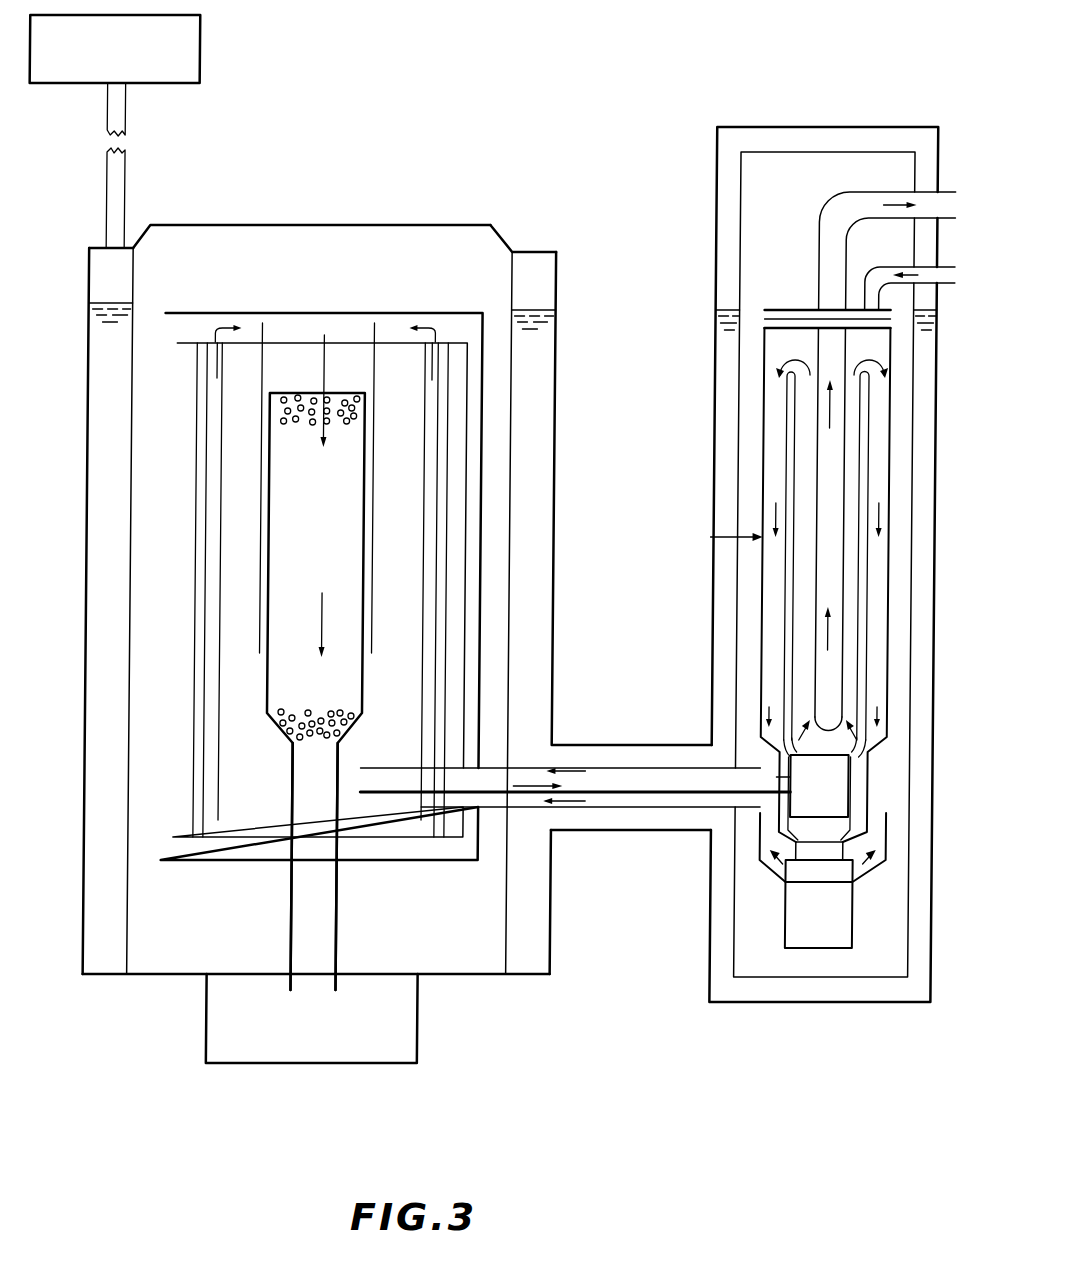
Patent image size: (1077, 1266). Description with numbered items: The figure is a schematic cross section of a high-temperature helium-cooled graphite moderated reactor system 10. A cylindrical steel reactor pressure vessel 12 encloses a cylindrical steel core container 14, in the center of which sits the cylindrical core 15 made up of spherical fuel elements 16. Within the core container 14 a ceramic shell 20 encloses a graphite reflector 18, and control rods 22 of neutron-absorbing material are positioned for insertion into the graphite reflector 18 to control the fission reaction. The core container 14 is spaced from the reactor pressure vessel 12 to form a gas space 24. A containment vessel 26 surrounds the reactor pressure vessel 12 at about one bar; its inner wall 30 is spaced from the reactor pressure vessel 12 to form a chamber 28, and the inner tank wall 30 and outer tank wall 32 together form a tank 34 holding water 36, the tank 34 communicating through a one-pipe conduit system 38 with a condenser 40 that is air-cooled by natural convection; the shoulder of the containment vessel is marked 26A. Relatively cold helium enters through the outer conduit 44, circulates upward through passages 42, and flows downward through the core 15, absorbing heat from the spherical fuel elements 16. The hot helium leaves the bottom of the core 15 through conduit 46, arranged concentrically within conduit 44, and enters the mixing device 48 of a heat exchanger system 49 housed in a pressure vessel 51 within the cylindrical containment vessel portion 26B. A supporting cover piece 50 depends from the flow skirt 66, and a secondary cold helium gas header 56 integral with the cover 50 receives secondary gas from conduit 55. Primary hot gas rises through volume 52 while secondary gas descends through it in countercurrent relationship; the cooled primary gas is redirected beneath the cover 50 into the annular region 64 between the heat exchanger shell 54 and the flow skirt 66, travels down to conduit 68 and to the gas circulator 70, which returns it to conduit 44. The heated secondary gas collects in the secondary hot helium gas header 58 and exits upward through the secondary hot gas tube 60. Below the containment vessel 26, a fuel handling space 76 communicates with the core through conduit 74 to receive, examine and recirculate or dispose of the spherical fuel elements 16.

The reactor system 10 is at (536, 115).
The reactor pressure vessel 12 is at (443, 310).
The core container 14 is at (250, 337).
The core 15 is at (336, 561).
The spherical fuel elements 16 is at (292, 422).
The graphite reflector 18 is at (198, 558).
The ceramic shell 20 is at (183, 595).
The control rods 22 is at (264, 363).
The gas space 24 is at (163, 447).
The containment vessel 26 is at (313, 210).
The casing shoulder 26A is at (452, 224).
The containment vessel portion 26B is at (862, 126).
The chamber 28 is at (492, 248).
The inner tank wall 30 is at (127, 690).
The outer tank wall 32 is at (85, 803).
The tank 34 is at (78, 288).
The water 36 is at (103, 345).
The one-pipe conduit system 38 is at (116, 187).
The condenser 40 is at (200, 62).
The passage 42 is at (212, 820).
The conduit 44 is at (641, 766).
The conduit 46 is at (657, 803).
The mixing device 48 is at (847, 780).
The heat exchanger system 49 is at (718, 535).
The supporting cover piece 50 is at (885, 325).
The pressure vessel 51 is at (762, 151).
The volume 52 is at (852, 625).
The heat exchanger shell 54 is at (865, 552).
The conduit 55 is at (945, 272).
The secondary cold helium gas header 56 is at (893, 310).
The secondary hot helium gas header 58 is at (843, 712).
The secondary hot gas tube 60 is at (845, 388).
The annular region 64 is at (883, 438).
The flow skirt 66 is at (893, 473).
The conduit 68 is at (867, 820).
The gas circulator 70 is at (850, 902).
The conduit 74 is at (334, 904).
The fuel handling space 76 is at (405, 1021).